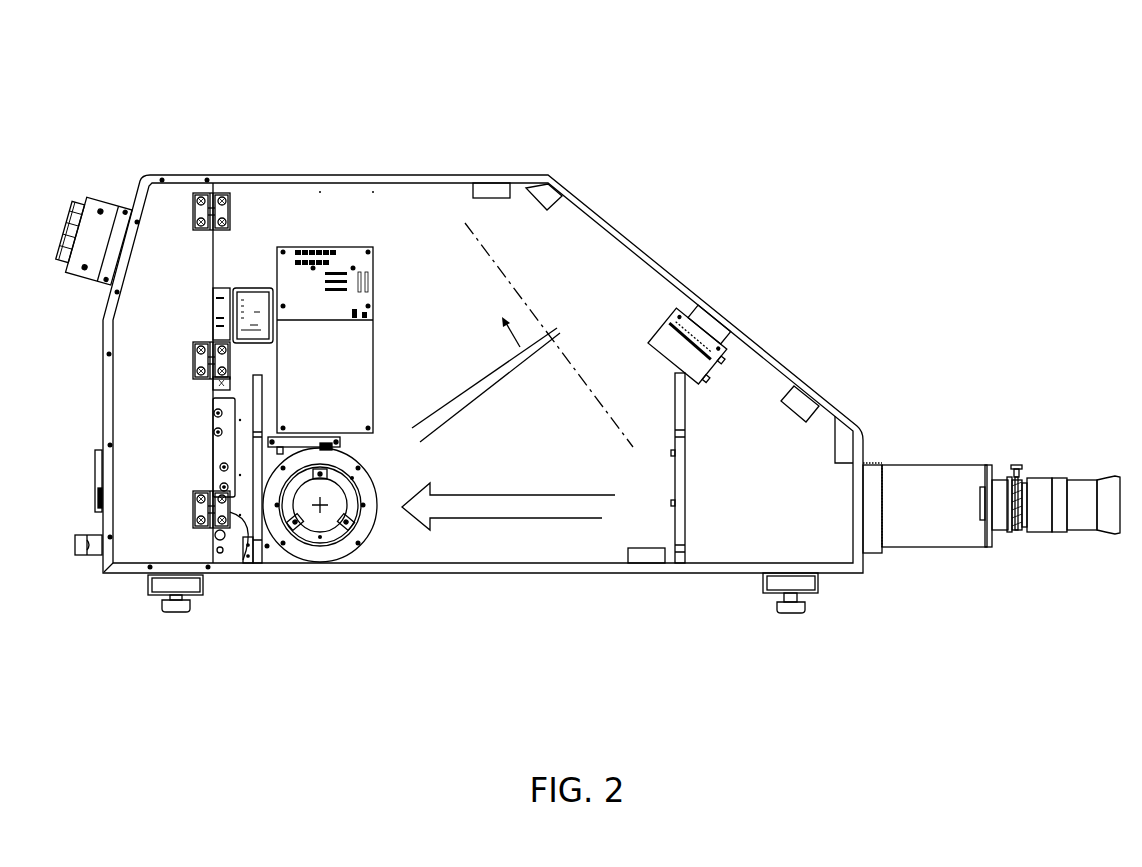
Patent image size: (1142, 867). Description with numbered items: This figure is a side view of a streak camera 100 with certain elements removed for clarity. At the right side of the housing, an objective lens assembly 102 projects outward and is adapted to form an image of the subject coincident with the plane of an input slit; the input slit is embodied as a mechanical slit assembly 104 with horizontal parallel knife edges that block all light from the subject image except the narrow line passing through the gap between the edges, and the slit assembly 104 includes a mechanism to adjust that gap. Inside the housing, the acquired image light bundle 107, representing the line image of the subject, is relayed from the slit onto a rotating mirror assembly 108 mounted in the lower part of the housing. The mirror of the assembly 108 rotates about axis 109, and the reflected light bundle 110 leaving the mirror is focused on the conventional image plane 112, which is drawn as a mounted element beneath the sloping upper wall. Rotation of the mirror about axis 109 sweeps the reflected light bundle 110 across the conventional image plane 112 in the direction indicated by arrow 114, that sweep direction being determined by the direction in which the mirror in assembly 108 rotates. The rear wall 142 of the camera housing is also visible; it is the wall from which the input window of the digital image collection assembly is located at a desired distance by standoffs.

The streak camera 100 is at (659, 117).
The objective lens assembly 102 is at (991, 471).
The mechanical slit assembly 104 is at (940, 535).
The acquired image light bundle 107 is at (533, 507).
The rotating mirror assembly 108 is at (316, 542).
The axis 109 is at (318, 510).
The reflected light bundle 110 is at (455, 403).
The conventional image plane 112 is at (580, 337).
The arrow 114 is at (516, 346).
The rear wall 142 is at (355, 229).